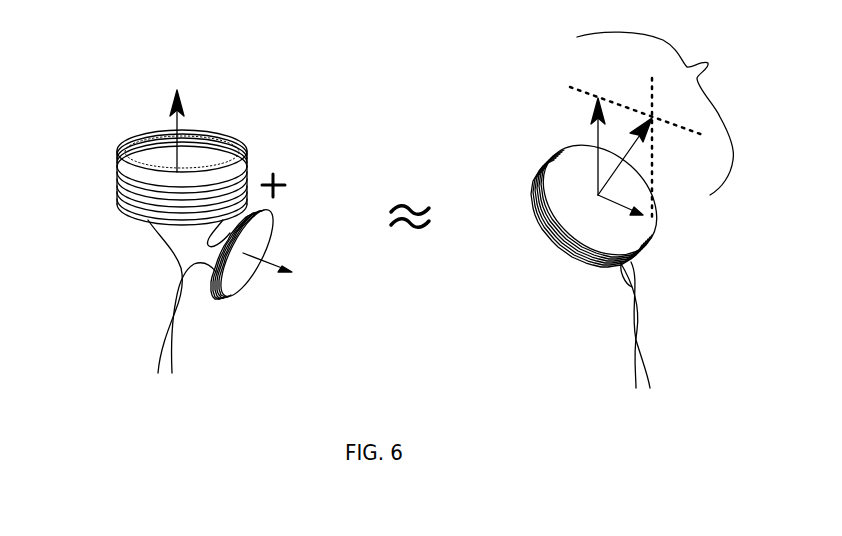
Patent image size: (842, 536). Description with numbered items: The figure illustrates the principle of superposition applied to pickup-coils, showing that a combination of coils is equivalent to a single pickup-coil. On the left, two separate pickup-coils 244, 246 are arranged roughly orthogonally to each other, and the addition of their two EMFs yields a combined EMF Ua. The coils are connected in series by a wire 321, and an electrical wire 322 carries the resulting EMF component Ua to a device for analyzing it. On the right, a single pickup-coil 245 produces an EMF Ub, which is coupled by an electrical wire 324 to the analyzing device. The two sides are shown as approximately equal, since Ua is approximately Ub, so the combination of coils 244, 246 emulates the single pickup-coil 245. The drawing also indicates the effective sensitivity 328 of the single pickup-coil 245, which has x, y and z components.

The pickup-coil 244 is at (230, 138).
The pickup-coil 246 is at (263, 297).
The single pickup-coil 245 is at (665, 235).
The wire 321 is at (200, 240).
The electrical wire 322 is at (145, 360).
The electrical wire 324 is at (657, 350).
The effective sensitivity 328 is at (684, 111).